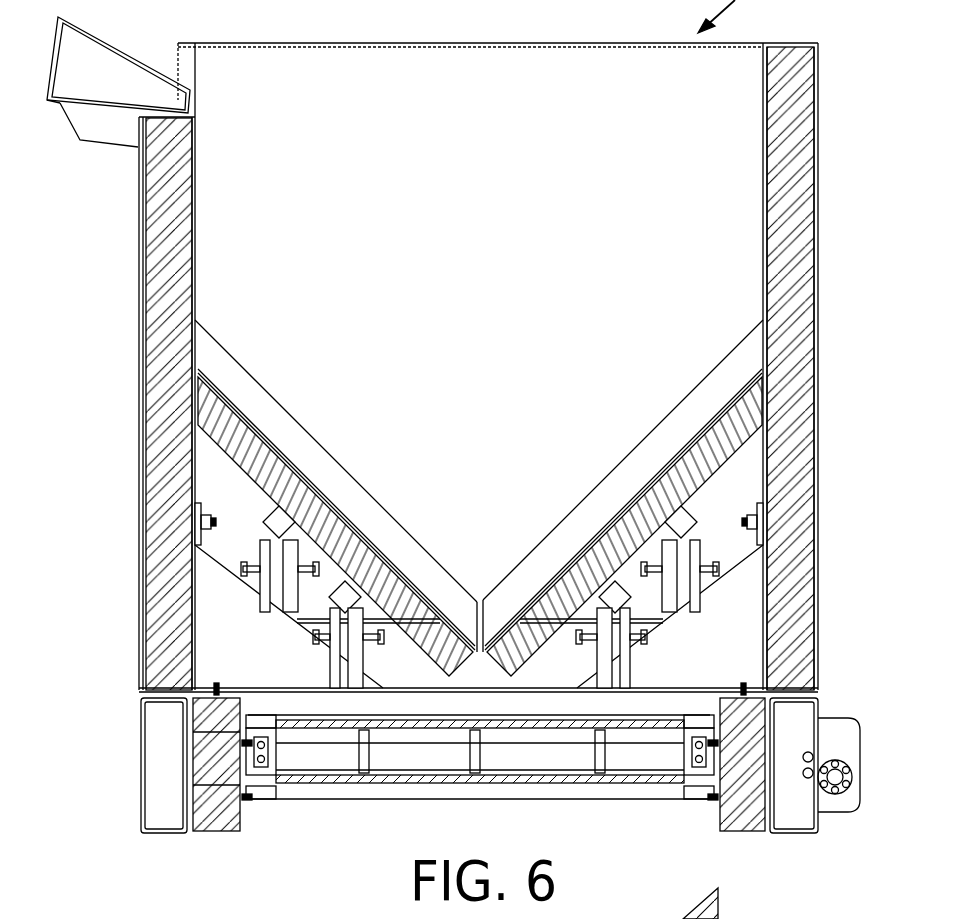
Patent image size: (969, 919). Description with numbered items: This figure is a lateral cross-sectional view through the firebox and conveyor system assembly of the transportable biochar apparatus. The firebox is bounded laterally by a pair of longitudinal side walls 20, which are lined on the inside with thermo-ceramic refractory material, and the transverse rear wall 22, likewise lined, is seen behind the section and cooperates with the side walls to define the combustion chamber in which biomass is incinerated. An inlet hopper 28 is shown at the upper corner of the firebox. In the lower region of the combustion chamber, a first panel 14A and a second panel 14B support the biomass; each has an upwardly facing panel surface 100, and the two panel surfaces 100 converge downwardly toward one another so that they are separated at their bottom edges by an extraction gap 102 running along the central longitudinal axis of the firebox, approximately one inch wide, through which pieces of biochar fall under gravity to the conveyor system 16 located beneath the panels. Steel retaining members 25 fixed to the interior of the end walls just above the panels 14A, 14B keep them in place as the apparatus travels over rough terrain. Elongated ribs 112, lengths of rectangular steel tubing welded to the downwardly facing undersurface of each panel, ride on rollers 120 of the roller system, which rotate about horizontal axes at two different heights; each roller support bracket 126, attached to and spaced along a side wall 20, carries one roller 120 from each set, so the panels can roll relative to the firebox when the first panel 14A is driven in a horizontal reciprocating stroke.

The inlet hopper 28 is at (112, 47).
The longitudinal side walls 20 is at (168, 268).
The transverse rear wall 22 is at (486, 200).
The steel retaining members 25 is at (268, 407).
The panel surface 100 is at (425, 592).
The elongated ribs 112 is at (279, 522).
The first panel 14A is at (614, 500).
The second panel 14B is at (346, 500).
The rollers 120 is at (265, 548).
The roller support brackets 126 is at (222, 605).
The extraction gap 102 is at (485, 686).
The conveyor system 16 is at (377, 815).